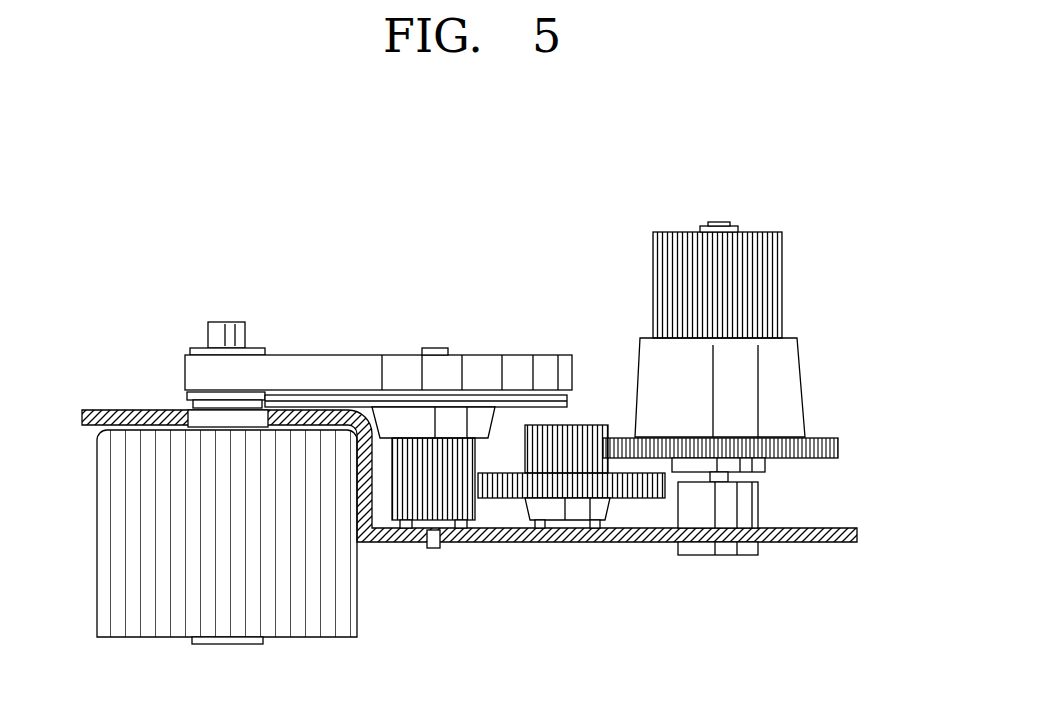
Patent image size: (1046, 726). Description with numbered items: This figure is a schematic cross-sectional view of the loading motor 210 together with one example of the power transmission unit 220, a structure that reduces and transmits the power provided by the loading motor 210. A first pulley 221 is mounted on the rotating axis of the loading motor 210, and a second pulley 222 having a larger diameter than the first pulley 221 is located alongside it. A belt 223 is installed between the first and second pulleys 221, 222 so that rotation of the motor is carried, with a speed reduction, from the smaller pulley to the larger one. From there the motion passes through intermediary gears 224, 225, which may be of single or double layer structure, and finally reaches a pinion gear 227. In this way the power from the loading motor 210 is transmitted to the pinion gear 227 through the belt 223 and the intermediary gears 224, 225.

The loading motor 210 is at (112, 563).
The power transmission unit 220 is at (846, 278).
The first pulley 221 is at (262, 350).
The second pulley 222 is at (565, 398).
The belt 223 is at (363, 358).
The intermediary gear 224 is at (452, 520).
The intermediary gear 225 is at (628, 497).
The pinion gear 227 is at (673, 253).